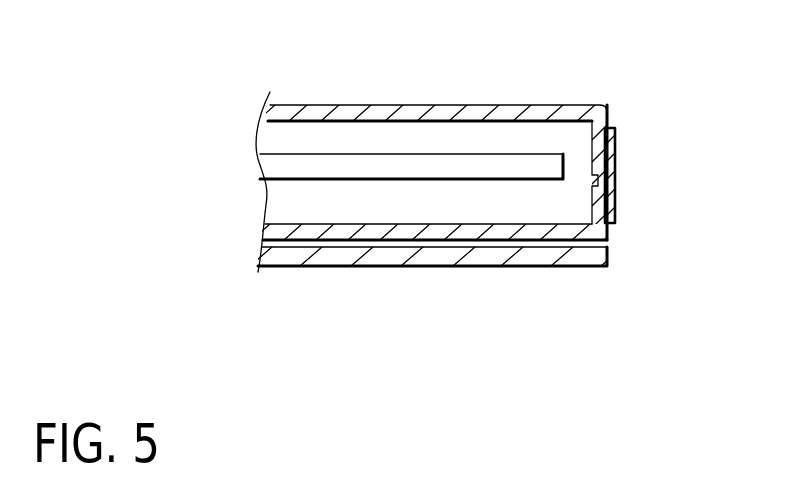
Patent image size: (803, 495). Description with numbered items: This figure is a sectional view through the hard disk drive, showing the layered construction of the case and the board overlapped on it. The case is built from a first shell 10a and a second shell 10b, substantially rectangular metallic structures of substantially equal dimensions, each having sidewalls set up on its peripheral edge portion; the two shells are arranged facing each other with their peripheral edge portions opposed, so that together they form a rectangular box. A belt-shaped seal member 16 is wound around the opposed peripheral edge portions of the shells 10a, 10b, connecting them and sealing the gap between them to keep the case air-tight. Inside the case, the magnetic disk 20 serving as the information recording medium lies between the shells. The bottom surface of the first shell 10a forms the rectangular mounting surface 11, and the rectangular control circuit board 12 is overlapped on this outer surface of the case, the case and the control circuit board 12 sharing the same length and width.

The first shell 10a is at (488, 232).
The second shell 10b is at (492, 115).
The mounting surface 11 is at (387, 242).
The control circuit board 12 is at (327, 255).
The seal member 16 is at (617, 160).
The magnetic disk 20 is at (405, 163).